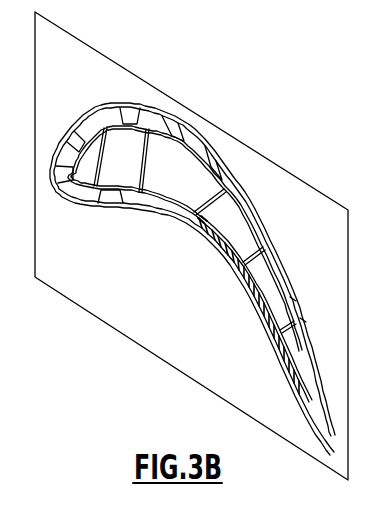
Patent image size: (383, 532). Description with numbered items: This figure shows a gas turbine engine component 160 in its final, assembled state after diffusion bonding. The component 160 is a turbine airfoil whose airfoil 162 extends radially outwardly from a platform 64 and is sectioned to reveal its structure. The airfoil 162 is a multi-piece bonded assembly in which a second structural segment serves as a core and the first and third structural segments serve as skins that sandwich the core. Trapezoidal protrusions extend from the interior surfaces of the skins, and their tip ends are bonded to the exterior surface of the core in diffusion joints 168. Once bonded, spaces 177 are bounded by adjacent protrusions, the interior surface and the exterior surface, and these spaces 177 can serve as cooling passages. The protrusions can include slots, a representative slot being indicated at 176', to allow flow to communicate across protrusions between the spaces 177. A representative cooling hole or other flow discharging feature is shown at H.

The platform 64 is at (272, 188).
The component 160 is at (105, 211).
The airfoil 162 is at (107, 90).
The flow discharging feature H is at (181, 128).
The diffusion joints 168 is at (186, 152).
The slot 176' is at (162, 254).
The spaces 177 is at (222, 258).